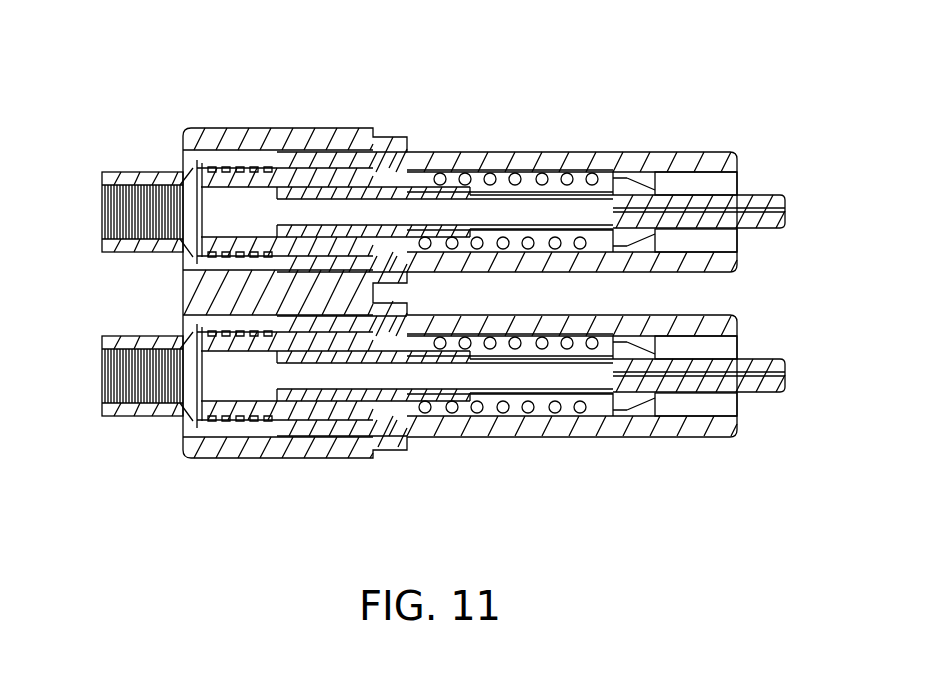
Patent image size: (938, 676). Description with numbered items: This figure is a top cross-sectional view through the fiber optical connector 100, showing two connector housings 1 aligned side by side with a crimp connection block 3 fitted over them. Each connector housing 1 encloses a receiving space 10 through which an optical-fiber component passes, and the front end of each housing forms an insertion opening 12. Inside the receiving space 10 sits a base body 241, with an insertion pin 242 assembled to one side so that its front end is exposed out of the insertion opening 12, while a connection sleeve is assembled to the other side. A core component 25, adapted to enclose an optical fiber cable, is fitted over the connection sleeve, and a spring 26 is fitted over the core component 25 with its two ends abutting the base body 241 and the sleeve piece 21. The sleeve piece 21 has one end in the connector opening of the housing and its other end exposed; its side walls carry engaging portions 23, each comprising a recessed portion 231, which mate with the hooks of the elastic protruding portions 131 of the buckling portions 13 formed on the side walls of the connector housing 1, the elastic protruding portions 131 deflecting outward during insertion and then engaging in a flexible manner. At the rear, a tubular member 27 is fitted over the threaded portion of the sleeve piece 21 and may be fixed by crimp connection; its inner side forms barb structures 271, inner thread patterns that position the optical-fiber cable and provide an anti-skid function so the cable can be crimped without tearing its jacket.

The fiber optical connector 100 is at (469, 88).
The connector housing 1 is at (698, 422).
The receiving space 10 is at (713, 178).
The insertion opening 12 is at (737, 412).
The buckling portion 13 is at (399, 518).
The elastic protruding portion 131 is at (372, 442).
The crimp connection block 3 is at (230, 448).
The sleeve piece 21 is at (265, 458).
The engaging portion 23 is at (340, 518).
The recessed portion 231 is at (305, 442).
The base body 241 is at (612, 408).
The insertion pin 242 is at (778, 204).
The core component 25 is at (437, 420).
The spring 26 is at (560, 420).
The tubular member 27 is at (193, 458).
The barb structure 271 is at (102, 233).